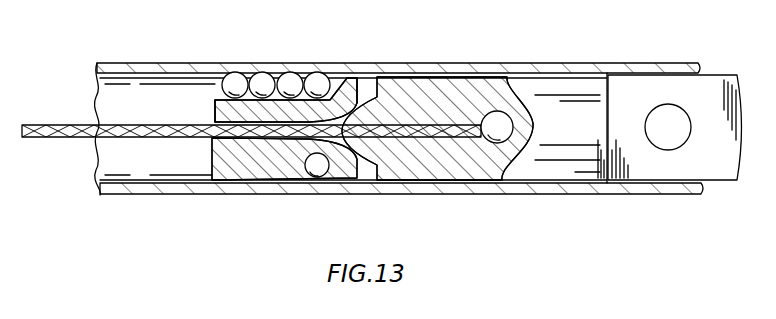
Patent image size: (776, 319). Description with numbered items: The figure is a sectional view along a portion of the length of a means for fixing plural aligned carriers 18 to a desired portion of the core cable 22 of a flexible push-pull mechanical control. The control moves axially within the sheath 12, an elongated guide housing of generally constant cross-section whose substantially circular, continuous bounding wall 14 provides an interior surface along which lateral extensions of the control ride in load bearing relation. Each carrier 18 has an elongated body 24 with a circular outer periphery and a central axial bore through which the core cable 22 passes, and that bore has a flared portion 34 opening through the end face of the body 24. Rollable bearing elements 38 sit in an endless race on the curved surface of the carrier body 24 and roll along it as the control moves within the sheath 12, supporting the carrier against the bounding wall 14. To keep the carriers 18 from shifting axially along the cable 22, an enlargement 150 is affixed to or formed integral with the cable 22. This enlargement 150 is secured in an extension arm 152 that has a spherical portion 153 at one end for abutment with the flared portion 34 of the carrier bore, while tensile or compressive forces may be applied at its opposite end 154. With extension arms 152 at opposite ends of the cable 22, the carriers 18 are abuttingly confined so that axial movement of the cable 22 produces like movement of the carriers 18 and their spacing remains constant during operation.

The sheath 12 is at (410, 65).
The bounding wall 14 is at (380, 192).
The carrier 18 is at (270, 165).
The core cable 22 is at (60, 124).
The elongated body 24 is at (218, 113).
The flared portion 34 is at (345, 148).
The bearing elements 38 is at (263, 72).
The enlargement 150 is at (496, 112).
The extension arm 152 is at (432, 173).
The spherical portion 153 is at (362, 75).
The opposite end 154 is at (700, 90).